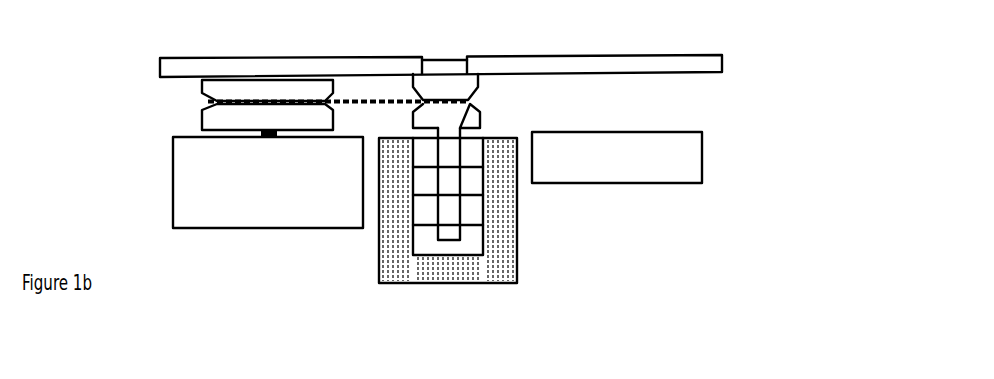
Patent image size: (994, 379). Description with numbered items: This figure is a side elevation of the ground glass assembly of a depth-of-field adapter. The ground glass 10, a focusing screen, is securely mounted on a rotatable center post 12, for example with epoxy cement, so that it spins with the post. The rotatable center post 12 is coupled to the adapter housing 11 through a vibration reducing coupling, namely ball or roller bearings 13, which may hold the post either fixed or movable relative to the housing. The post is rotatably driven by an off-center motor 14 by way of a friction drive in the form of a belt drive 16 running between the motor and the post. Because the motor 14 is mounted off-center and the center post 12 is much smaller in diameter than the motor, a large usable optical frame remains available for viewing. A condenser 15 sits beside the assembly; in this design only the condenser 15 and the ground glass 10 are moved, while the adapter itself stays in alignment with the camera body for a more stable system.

The ground glass 10 is at (667, 55).
The adapter housing 11 is at (507, 262).
The rotatable center post 12 is at (450, 243).
The ball or roller bearings 13 is at (412, 237).
The off-center motor 14 is at (230, 228).
The condenser 15 is at (702, 158).
The belt drive 16 is at (220, 100).